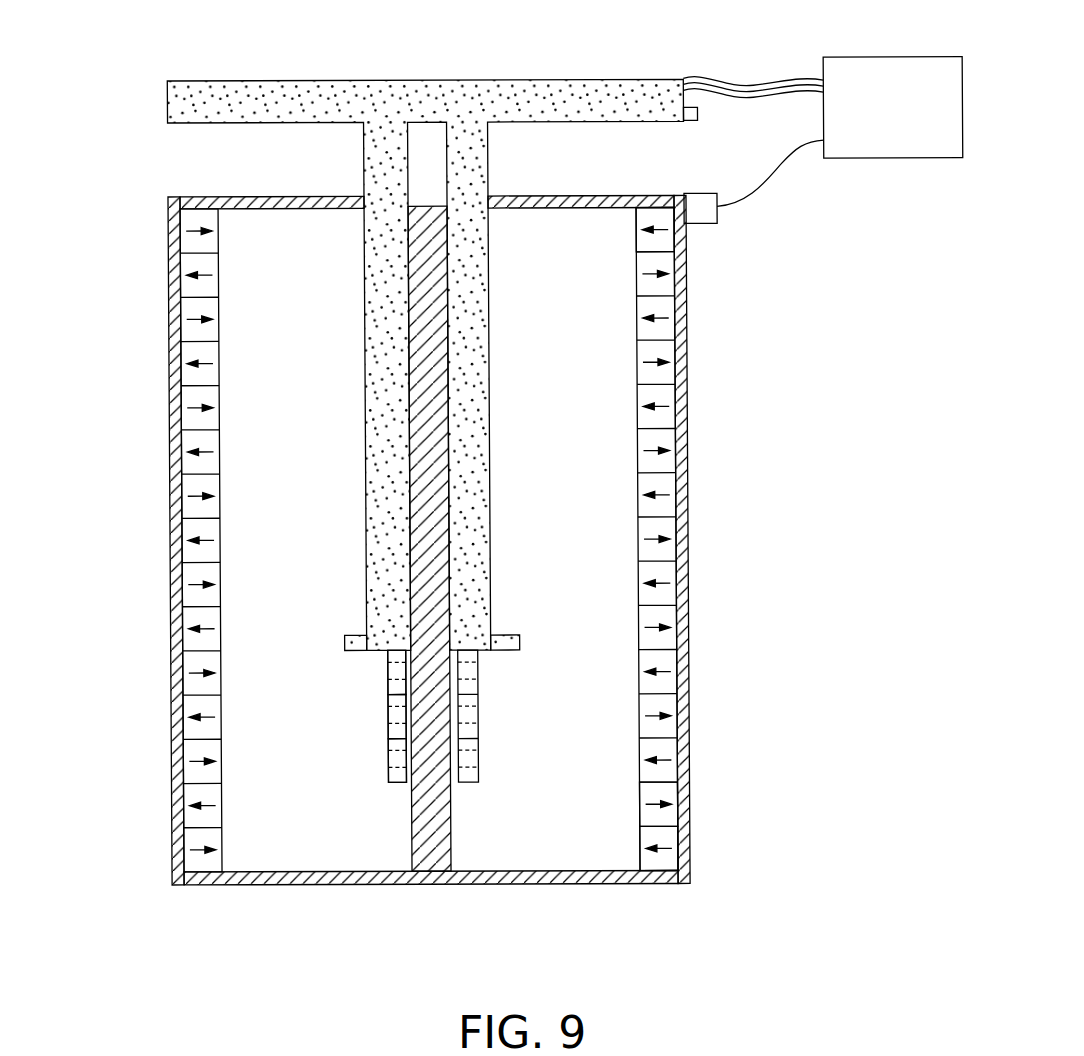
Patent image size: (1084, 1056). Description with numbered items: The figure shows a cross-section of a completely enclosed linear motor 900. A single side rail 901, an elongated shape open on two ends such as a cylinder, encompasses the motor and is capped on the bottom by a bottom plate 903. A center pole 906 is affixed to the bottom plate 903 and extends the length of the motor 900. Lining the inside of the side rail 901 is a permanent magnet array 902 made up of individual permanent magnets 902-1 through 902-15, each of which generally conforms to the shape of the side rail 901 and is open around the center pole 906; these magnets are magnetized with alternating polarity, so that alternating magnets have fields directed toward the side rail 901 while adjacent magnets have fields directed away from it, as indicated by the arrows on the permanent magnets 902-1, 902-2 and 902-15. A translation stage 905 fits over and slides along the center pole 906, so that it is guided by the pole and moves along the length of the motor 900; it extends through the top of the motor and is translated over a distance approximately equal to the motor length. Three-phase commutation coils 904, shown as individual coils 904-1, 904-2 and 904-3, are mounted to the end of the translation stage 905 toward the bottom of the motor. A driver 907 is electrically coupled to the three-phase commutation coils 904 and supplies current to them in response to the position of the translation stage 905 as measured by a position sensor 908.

The linear motor 900 is at (838, 506).
The side rail 901 is at (168, 562).
The permanent magnet array 902 is at (429, 539).
The permanent magnet 902-1 is at (636, 848).
The permanent magnet 902-2 is at (636, 804).
The permanent magnet 902-15 is at (636, 230).
The bottom plate 903 is at (465, 885).
The three-phase commutation coils 904 is at (428, 716).
The commutation coil 904-1 is at (385, 760).
The commutation coil 904-2 is at (385, 716).
The commutation coil 904-3 is at (385, 671).
The translation stage 905 is at (489, 369).
The center pole 906 is at (408, 833).
The driver 907 is at (897, 59).
The position sensor 908 is at (702, 195).